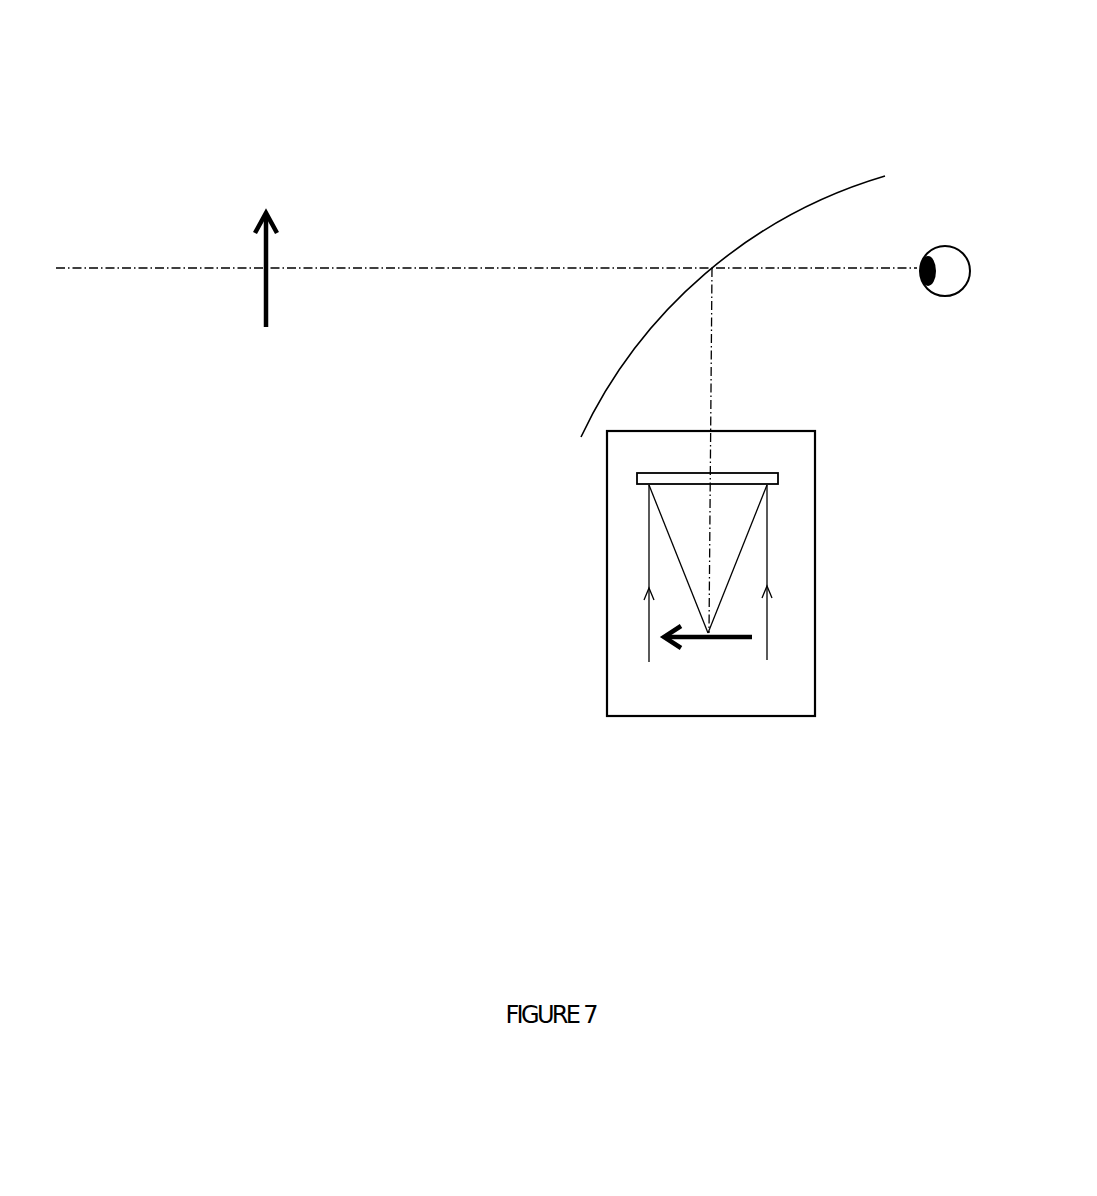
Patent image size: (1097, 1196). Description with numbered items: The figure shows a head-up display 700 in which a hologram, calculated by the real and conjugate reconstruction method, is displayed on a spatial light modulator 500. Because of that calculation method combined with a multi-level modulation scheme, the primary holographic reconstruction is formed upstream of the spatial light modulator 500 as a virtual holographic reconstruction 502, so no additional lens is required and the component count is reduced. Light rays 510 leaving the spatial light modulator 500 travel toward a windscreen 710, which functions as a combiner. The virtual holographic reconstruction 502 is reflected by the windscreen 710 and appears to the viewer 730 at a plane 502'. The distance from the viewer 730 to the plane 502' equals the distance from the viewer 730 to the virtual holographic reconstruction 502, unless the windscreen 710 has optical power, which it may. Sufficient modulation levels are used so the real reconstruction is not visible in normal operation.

The windscreen 710 is at (830, 195).
The viewer 730 is at (945, 289).
The plane 502' is at (357, 308).
The head-up display 700 is at (607, 693).
The spatial light modulator 500 is at (780, 481).
The light rays 510 is at (648, 562).
The virtual holographic reconstruction 502 is at (714, 715).